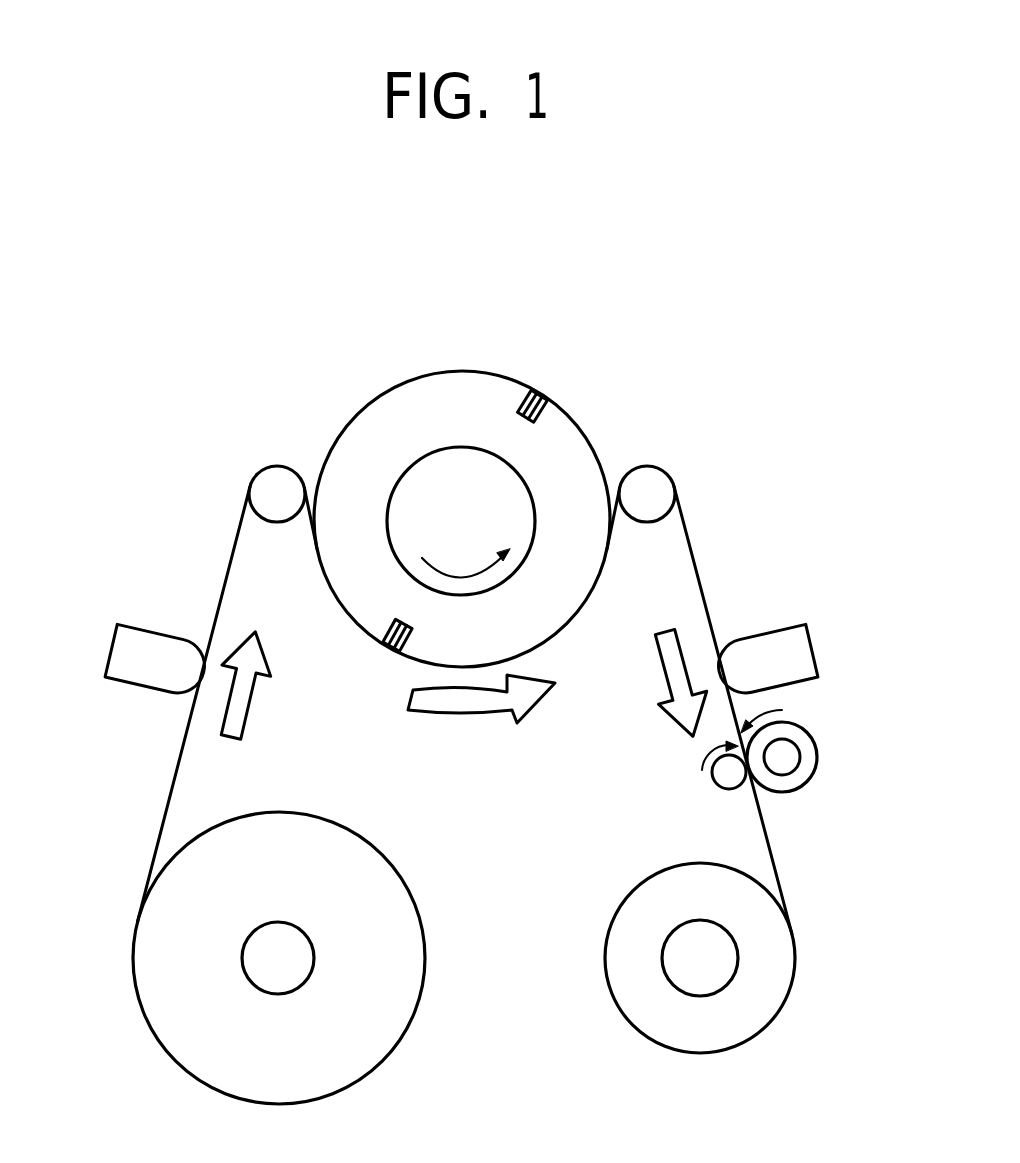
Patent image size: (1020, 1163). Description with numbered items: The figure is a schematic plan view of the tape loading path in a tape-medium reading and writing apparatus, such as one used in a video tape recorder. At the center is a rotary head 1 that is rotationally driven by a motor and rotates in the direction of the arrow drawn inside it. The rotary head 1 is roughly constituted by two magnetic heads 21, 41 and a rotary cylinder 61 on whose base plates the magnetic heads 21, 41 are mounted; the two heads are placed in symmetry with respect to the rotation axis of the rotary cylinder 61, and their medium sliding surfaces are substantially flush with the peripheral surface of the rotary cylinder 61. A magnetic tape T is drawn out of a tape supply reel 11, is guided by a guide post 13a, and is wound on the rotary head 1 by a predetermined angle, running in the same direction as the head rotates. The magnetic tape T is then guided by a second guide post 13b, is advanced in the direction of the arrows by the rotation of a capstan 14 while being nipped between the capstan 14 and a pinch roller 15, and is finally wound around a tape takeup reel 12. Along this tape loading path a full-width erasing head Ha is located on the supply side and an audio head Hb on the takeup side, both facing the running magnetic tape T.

The rotary head 1 is at (496, 366).
The rotary cylinder 61 is at (410, 400).
The magnetic head 41 is at (517, 416).
The magnetic head 21 is at (403, 615).
The guide post 13a is at (270, 481).
The guide post 13b is at (650, 474).
The magnetic tape T is at (172, 792).
The full-width erasing head Ha is at (150, 633).
The audio head Hb is at (787, 630).
The capstan 14 is at (722, 785).
The pinch roller 15 is at (802, 777).
The tape supply reel 11 is at (167, 1037).
The tape takeup reel 12 is at (735, 1030).